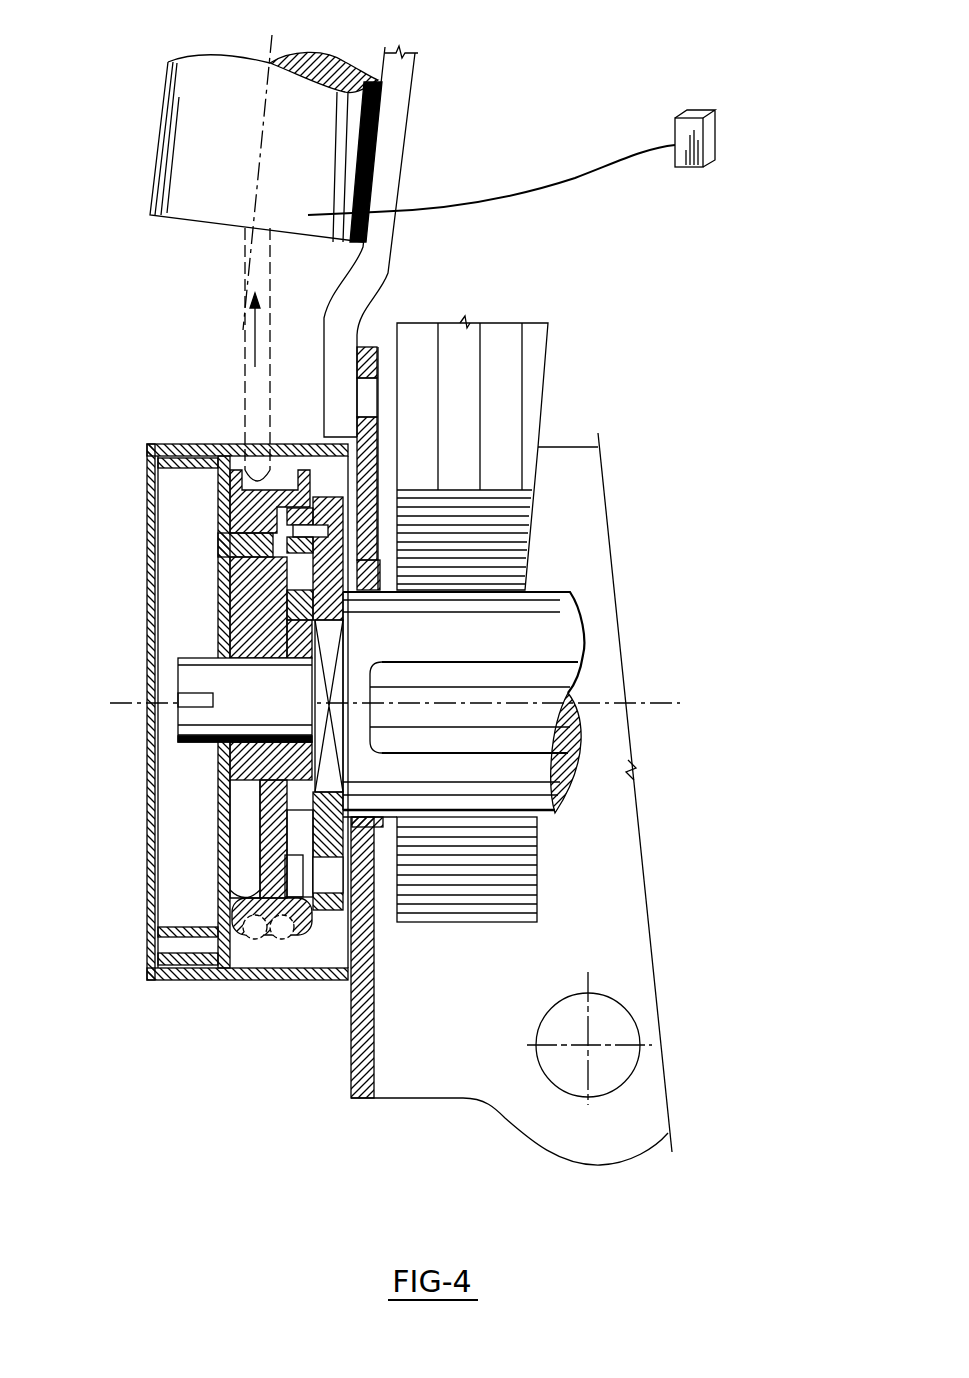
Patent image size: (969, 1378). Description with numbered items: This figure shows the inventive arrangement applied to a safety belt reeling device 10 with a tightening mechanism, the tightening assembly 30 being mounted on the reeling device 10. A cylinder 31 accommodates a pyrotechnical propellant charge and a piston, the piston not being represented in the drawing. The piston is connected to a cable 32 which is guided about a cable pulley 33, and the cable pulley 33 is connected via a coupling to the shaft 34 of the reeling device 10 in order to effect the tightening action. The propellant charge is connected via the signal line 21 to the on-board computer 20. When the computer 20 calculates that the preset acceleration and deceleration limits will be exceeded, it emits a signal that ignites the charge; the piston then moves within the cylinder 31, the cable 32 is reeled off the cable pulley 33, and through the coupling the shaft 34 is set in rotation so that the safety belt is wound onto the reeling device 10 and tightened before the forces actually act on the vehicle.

The safety belt reeling device 10 is at (435, 1010).
The on-board computer 20 is at (710, 138).
The signal line 21 is at (552, 185).
The rotary control assembly 30 is at (162, 412).
The cylinder 31 is at (378, 148).
The cable 32 is at (240, 290).
The cable pulley 33 is at (250, 519).
The shaft 34 is at (545, 627).